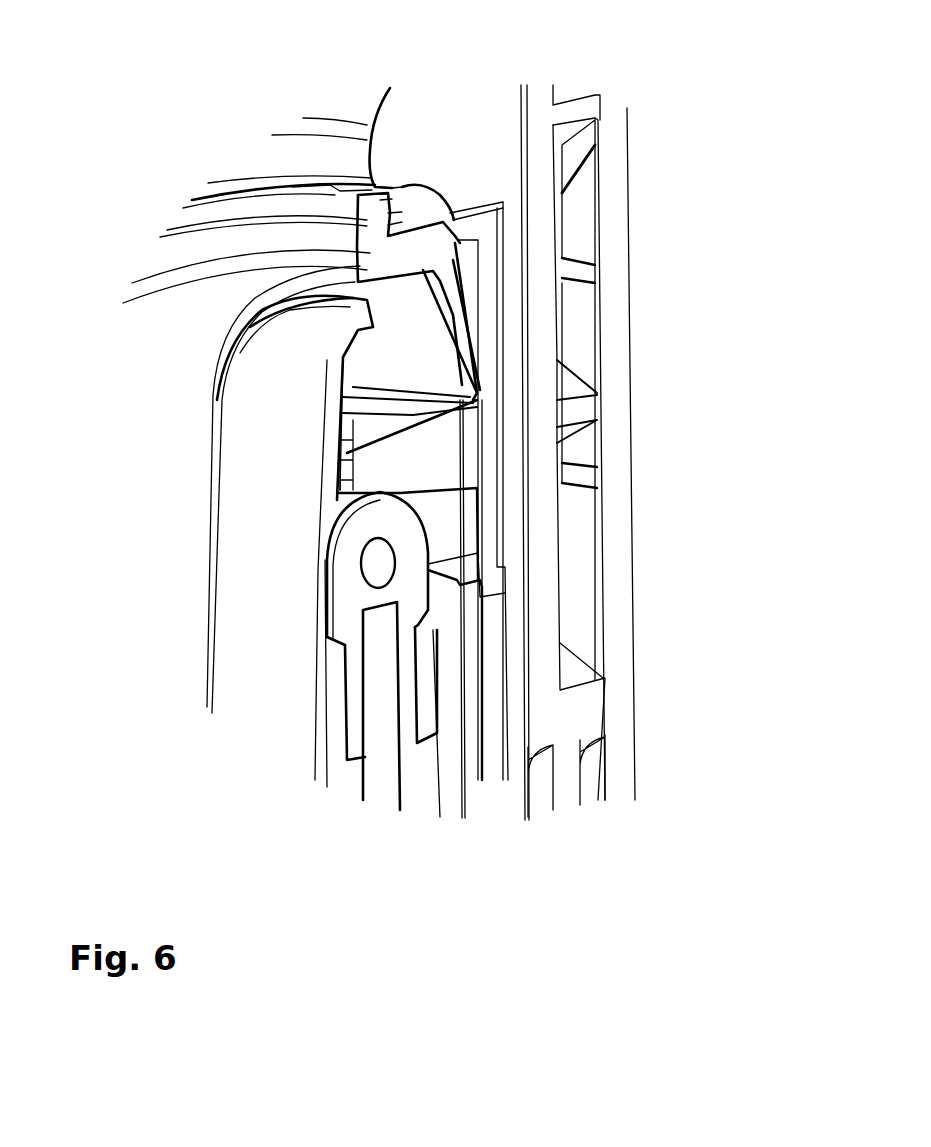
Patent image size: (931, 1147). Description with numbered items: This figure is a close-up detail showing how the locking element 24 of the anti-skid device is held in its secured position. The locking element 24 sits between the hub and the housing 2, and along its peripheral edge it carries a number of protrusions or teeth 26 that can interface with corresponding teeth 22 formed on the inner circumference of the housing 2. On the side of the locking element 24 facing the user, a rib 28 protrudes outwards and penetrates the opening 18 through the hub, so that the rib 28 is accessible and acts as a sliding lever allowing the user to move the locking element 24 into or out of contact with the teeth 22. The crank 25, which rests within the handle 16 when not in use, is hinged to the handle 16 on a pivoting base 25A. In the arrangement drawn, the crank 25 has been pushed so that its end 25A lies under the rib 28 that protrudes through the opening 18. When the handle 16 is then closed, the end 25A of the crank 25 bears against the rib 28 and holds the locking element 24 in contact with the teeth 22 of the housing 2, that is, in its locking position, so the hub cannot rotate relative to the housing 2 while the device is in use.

The housing 2 is at (285, 155).
The handle 16 is at (240, 448).
The opening 18 is at (446, 573).
The teeth 22 is at (390, 186).
The locking element 24 is at (487, 272).
The crank 25 is at (348, 780).
The pivoting base 25A is at (350, 536).
The teeth 26 is at (415, 202).
The rib 28 is at (375, 463).